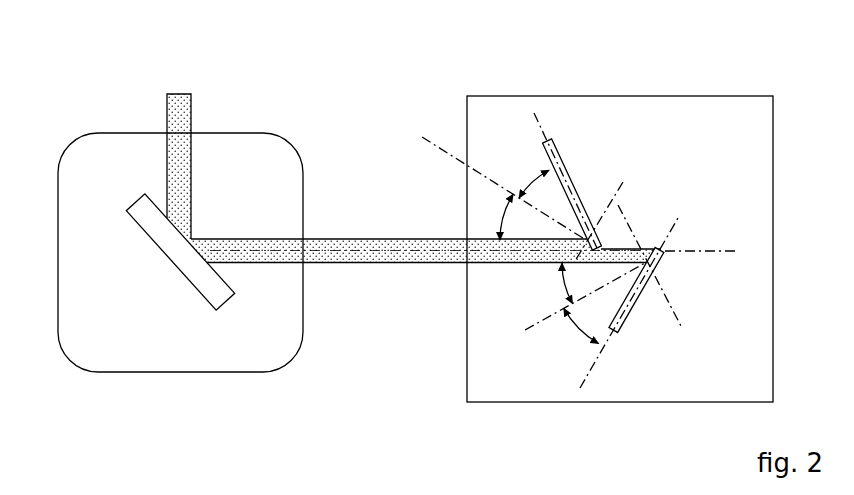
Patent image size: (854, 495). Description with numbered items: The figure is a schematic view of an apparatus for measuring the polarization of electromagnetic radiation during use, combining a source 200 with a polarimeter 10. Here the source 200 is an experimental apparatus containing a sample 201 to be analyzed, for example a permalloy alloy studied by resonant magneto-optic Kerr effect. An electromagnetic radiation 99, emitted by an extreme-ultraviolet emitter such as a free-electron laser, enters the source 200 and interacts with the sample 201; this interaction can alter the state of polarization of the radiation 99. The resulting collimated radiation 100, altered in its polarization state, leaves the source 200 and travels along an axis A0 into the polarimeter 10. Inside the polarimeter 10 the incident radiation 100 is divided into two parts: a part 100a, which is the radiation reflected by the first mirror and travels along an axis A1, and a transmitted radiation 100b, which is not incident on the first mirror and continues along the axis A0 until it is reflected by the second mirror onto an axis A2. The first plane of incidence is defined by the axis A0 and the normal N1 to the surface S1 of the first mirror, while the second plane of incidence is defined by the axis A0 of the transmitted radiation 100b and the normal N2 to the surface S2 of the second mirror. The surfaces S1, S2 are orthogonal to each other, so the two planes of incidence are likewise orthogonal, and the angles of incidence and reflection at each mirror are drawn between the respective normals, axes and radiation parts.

The source 200 is at (56, 128).
The electromagnetic radiation 99 is at (165, 175).
The sample 201 is at (197, 273).
The collimated radiation 100 is at (412, 245).
The polarimeter 10 is at (516, 94).
The reflected radiation part 100a is at (557, 152).
The transmitted radiation 100b is at (663, 258).
The normal to the surface of the first mirror N1 is at (435, 147).
The normal to the surface of the second mirror N2 is at (525, 331).
The axis of the reflected radiation A1 is at (535, 122).
The axis of the reflected transmitted part A2 is at (587, 373).
The axis of the radiation A0 is at (720, 251).
The surface of the first mirror S1 is at (617, 192).
The surface of the second mirror S2 is at (624, 222).